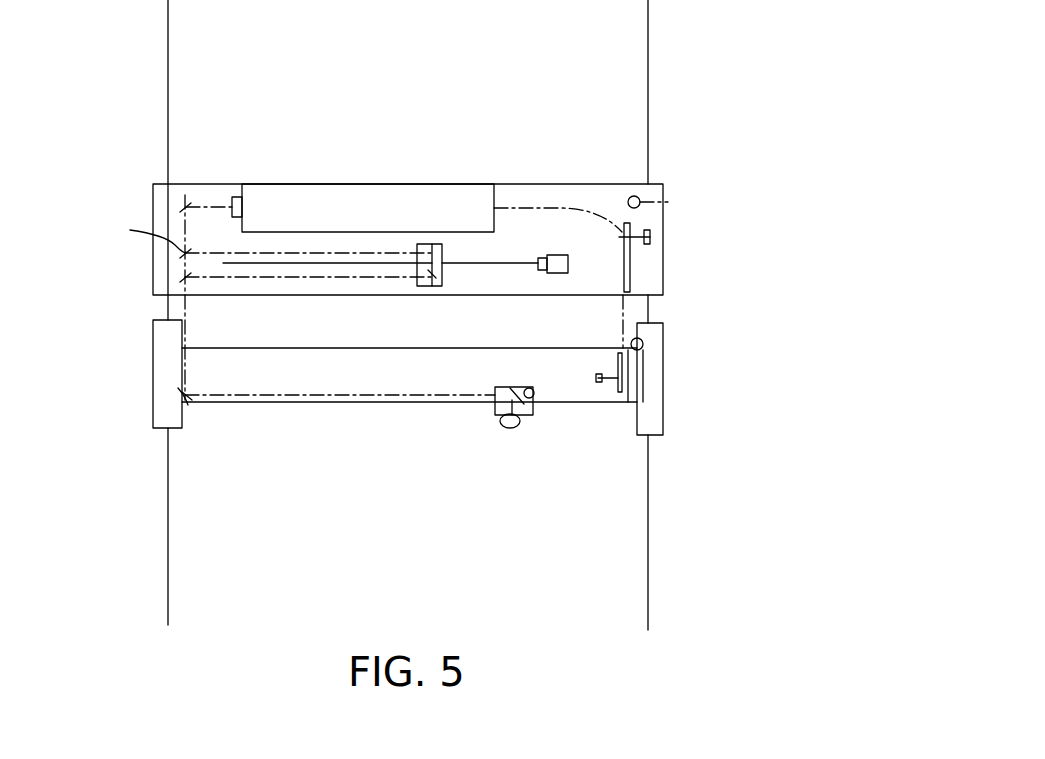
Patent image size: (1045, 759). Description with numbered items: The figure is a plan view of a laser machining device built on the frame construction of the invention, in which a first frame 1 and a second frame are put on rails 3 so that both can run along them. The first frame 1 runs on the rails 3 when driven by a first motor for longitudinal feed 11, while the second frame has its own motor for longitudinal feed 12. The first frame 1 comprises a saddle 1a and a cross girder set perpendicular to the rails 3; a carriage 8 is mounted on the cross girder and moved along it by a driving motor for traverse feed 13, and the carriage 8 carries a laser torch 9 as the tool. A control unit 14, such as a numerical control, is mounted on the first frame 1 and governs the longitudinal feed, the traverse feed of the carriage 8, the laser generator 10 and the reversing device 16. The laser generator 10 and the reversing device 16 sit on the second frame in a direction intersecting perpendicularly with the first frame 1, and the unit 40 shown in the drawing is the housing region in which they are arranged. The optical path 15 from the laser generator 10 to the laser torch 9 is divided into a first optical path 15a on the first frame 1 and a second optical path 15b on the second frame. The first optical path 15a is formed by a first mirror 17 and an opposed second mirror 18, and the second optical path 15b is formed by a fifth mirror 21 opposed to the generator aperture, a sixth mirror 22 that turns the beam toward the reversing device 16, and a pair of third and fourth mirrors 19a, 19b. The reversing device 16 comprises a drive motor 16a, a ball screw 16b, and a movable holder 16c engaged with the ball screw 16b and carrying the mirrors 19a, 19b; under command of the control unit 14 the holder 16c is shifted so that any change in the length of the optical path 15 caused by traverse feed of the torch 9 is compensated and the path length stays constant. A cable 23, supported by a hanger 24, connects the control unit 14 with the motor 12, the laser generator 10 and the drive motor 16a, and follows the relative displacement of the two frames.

The first frame 1 is at (350, 403).
The saddle 1a is at (153, 425).
The first rails 3 is at (168, 590).
The carriage 8 is at (152, 310).
The laser torch 9 is at (510, 428).
The laser generator 10 is at (394, 184).
The first motor for longitudinal feed 11 is at (645, 345).
The motor for longitudinal feed 12 is at (672, 203).
The driving motor for traverse feed 13 is at (532, 390).
The control unit 14 is at (658, 380).
The optical path 15 is at (205, 393).
The first optical path 15a is at (290, 402).
The second optical path 15b is at (278, 253).
The reversing device 16 is at (448, 276).
The drive motor 16a is at (568, 268).
The ball screw 16b is at (538, 268).
The movable holder 16c is at (440, 247).
The first mirror 17 is at (495, 392).
The second mirror 18 is at (185, 404).
The third mirror 19a is at (430, 255).
The fourth mirror 19b is at (432, 276).
The fifth mirror 21 is at (188, 206).
The sixth mirror 22 is at (142, 227).
The cable 23 is at (640, 313).
The hanger 24 is at (650, 240).
The upper housing 40 is at (553, 184).